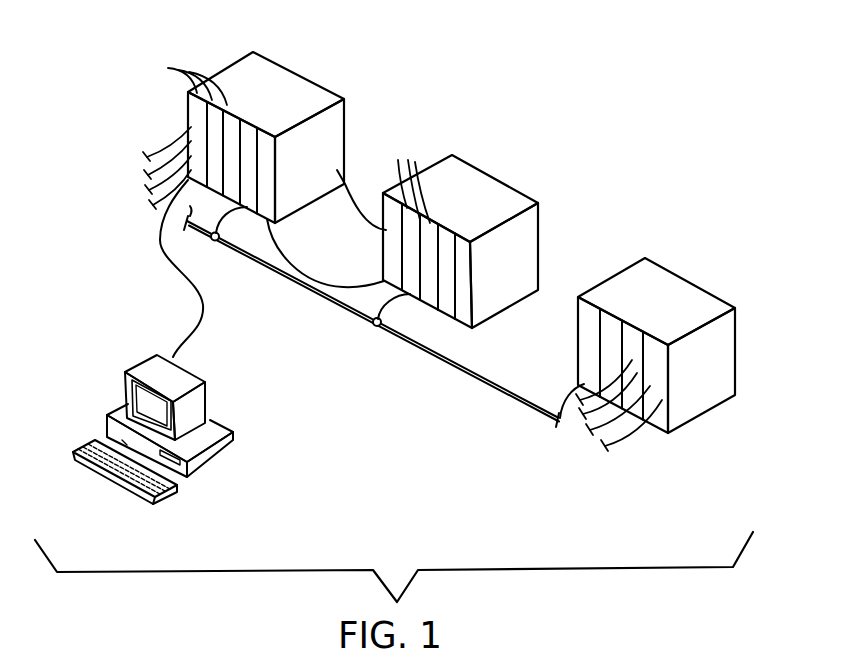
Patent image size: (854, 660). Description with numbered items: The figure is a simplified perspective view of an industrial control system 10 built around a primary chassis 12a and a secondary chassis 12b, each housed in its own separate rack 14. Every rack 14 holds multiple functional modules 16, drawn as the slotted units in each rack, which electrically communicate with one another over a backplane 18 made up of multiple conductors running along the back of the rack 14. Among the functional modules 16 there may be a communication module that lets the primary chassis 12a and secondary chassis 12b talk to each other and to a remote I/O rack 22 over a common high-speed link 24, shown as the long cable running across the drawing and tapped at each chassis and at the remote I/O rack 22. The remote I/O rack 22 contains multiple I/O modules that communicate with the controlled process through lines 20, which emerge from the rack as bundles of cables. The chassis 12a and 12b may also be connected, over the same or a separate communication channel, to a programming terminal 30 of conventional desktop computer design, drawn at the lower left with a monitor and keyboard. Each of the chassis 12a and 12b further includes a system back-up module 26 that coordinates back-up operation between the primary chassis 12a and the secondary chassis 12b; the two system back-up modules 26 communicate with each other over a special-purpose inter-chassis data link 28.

The industrial control system 10 is at (550, 122).
The primary chassis 12a is at (290, 88).
The secondary chassis 12b is at (505, 194).
The rack 14 is at (323, 97).
The functional modules 16 is at (294, 133).
The backplane 18 is at (282, 47).
The lines 20 is at (163, 143).
The remote I/O rack 22 is at (693, 278).
The common high-speed link 24 is at (480, 384).
The system back-up module 26 is at (271, 162).
The inter-chassis data link 28 is at (313, 290).
The programming terminal 30 is at (205, 385).